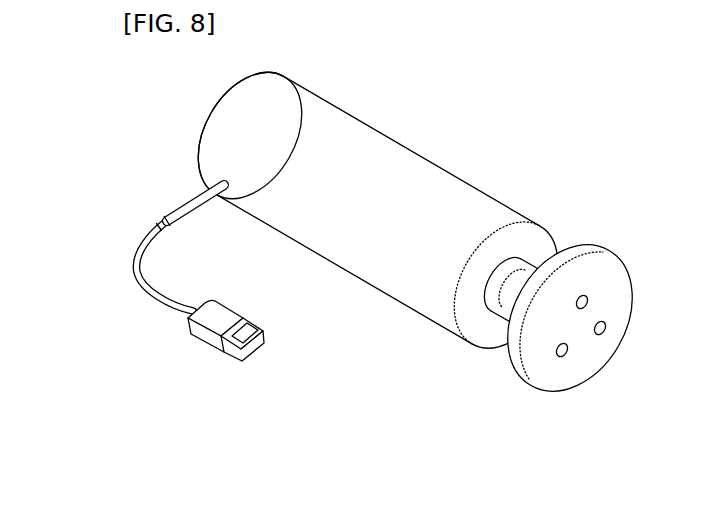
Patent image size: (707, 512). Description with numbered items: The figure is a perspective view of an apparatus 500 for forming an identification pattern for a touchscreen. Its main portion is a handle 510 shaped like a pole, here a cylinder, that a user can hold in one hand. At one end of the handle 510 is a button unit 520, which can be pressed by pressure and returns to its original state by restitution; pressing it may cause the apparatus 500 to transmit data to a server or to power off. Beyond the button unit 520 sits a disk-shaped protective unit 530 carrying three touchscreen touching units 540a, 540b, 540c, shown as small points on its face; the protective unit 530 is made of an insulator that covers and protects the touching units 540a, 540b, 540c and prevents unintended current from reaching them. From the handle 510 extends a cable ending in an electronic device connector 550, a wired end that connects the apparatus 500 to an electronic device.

The apparatus for forming an identification pattern for a touchscreen 500 is at (334, 419).
The handle 510 is at (399, 143).
The button unit 520 is at (546, 253).
The protective unit 530 is at (516, 375).
The touchscreen touching unit 540a is at (607, 330).
The touchscreen touching unit 540b is at (589, 301).
The touchscreen touching unit 540c is at (568, 355).
The electronic device connector 550 is at (200, 342).